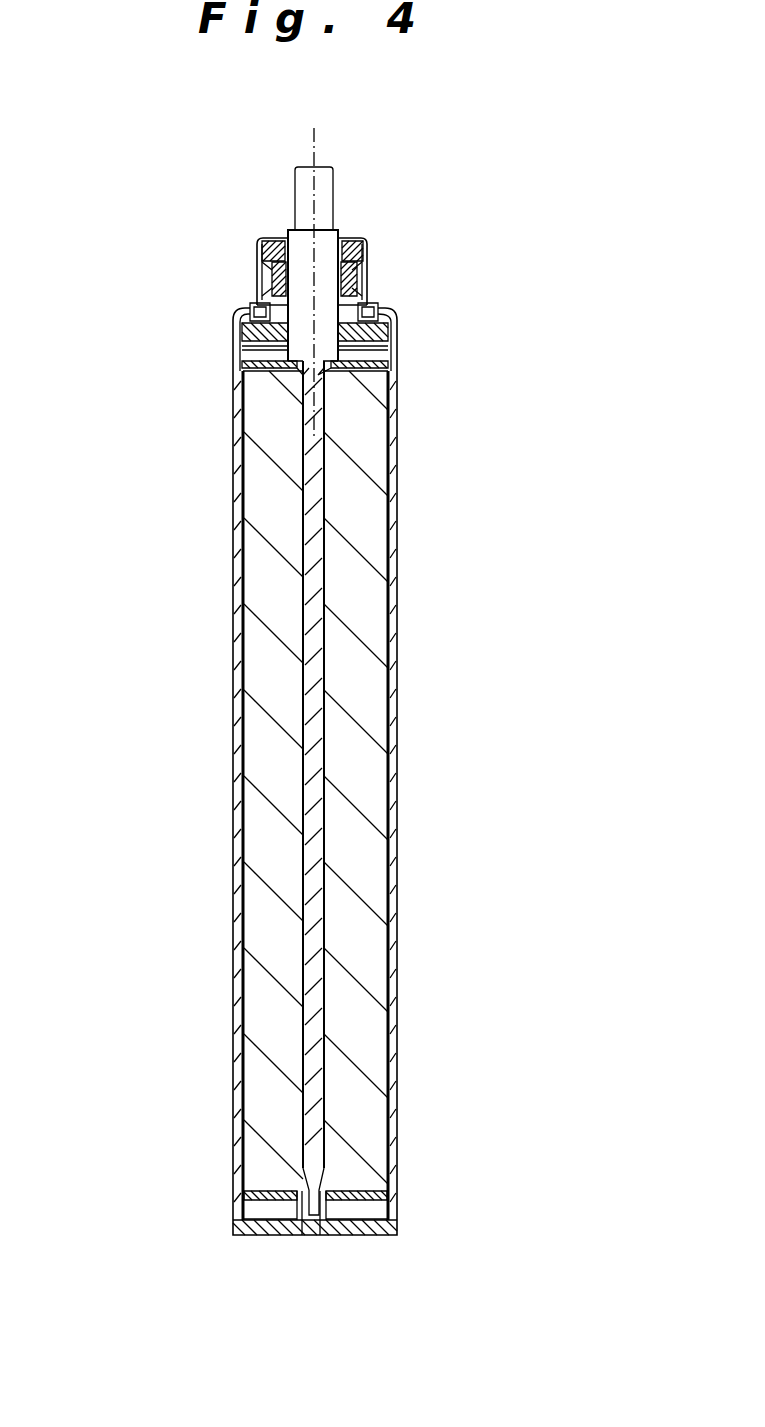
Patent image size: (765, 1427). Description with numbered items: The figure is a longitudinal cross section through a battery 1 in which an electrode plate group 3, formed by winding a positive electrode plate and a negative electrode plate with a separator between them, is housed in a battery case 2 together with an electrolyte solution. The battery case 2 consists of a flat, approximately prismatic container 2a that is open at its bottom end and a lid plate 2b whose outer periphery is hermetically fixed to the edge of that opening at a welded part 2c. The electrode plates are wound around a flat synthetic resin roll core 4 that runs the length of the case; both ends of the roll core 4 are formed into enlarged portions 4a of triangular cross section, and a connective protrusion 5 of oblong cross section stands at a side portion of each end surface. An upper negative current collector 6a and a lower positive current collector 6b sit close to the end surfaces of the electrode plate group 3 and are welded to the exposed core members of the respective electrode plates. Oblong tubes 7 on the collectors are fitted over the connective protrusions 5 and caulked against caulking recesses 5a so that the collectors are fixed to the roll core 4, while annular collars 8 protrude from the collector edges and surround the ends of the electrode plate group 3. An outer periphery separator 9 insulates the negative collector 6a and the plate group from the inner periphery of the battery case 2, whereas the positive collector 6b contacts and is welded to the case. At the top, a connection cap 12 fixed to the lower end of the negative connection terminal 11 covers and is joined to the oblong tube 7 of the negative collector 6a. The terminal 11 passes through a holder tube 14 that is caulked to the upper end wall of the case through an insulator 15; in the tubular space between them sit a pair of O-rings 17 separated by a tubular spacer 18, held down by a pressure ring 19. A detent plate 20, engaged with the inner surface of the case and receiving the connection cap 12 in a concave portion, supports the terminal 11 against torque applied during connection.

The battery 1 is at (183, 427).
The battery case 2 is at (233, 678).
The container 2a is at (236, 710).
The lid plate 2b is at (295, 1230).
The welded part 2c is at (233, 1223).
The electrode plate group 3 is at (353, 788).
The roll core 4 is at (313, 760).
The enlarged portions 4a is at (328, 372).
The connective protrusion 5 is at (305, 378).
The caulking recesses 5a is at (320, 1225).
The upper current collector 6a is at (373, 358).
The lower current collector 6b is at (353, 1202).
The oblong tubes 7 is at (242, 352).
The annular collars 8 is at (240, 373).
The outer periphery separator 9 is at (236, 942).
The negative connection terminal 11 is at (312, 235).
The connection cap 12 is at (390, 333).
The holder tube 14 is at (367, 262).
The insulator 15 is at (376, 304).
The O-rings 17 is at (260, 285).
The tubular spacer 18 is at (367, 277).
The pressure ring 19 is at (367, 240).
The detent plate 20 is at (236, 328).